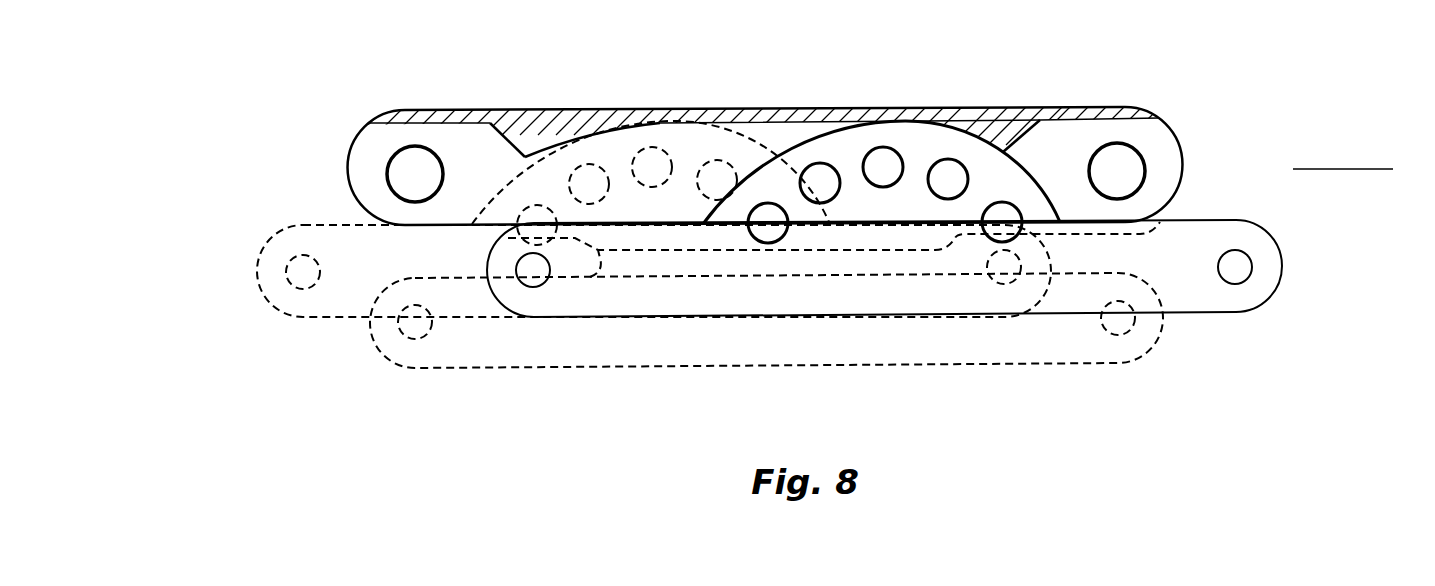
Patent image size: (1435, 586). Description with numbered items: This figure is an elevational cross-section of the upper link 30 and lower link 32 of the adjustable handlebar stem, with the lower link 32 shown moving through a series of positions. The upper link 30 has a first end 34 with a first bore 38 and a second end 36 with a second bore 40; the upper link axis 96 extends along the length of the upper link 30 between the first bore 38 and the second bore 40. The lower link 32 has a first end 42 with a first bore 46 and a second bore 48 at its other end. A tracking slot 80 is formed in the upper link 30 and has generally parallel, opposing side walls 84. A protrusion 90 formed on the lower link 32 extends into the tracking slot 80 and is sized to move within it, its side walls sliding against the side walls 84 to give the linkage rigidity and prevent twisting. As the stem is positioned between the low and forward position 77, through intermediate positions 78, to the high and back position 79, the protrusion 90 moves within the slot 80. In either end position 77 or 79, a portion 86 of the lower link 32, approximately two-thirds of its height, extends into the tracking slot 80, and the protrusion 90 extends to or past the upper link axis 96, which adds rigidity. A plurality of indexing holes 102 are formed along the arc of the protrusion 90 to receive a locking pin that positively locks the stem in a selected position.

The upper link 30 is at (527, 135).
The lower link 32 is at (1215, 237).
The first end 34 is at (358, 142).
The second end 36 is at (1163, 118).
The first bore 38 is at (392, 165).
The second bore 40 is at (1145, 170).
The first end 42 is at (553, 317).
The first bore 46 is at (547, 278).
The second bore 48 is at (1240, 272).
The low and forward position 77 is at (1264, 347).
The intermediate positions 78 is at (472, 380).
The high and back position 79 is at (260, 311).
The tracking slot 80 is at (727, 135).
The side walls 84 is at (755, 138).
The portion 86 is at (395, 233).
The protrusion 90 is at (983, 168).
The upper link axis 96 is at (1368, 169).
The indexing holes 102 is at (768, 203).